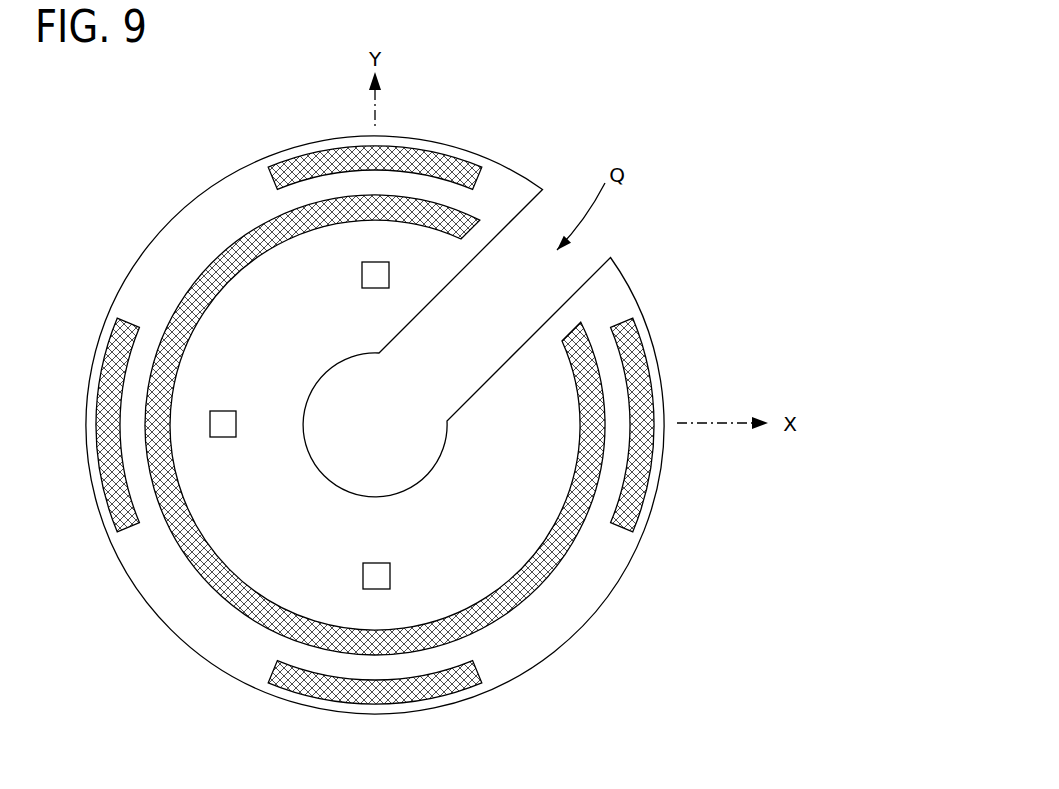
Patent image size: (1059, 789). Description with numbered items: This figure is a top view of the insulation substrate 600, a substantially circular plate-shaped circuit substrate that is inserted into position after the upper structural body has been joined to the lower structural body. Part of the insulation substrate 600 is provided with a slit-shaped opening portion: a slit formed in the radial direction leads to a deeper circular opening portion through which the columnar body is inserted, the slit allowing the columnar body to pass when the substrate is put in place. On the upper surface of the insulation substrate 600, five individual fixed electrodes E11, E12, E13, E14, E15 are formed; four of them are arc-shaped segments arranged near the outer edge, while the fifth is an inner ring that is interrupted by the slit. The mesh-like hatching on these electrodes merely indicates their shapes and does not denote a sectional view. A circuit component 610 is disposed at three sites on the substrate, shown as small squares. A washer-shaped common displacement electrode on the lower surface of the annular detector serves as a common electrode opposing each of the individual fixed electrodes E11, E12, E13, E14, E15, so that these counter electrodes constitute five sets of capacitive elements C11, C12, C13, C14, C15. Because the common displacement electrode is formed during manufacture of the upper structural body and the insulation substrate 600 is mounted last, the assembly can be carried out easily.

The insulation substrate 600 is at (175, 245).
The circuit component 610 is at (223, 422).
The individual fixed electrode E11 is at (663, 442).
The capacitive element C11 is at (637, 483).
The individual fixed electrode E12 is at (83, 409).
The capacitive element C12 is at (112, 365).
The individual fixed electrode E13 is at (390, 144).
The capacitive element C13 is at (433, 167).
The individual fixed electrode E14 is at (435, 693).
The capacitive element C14 is at (463, 682).
The individual fixed electrode E15 is at (375, 425).
The capacitive element C15 is at (528, 570).